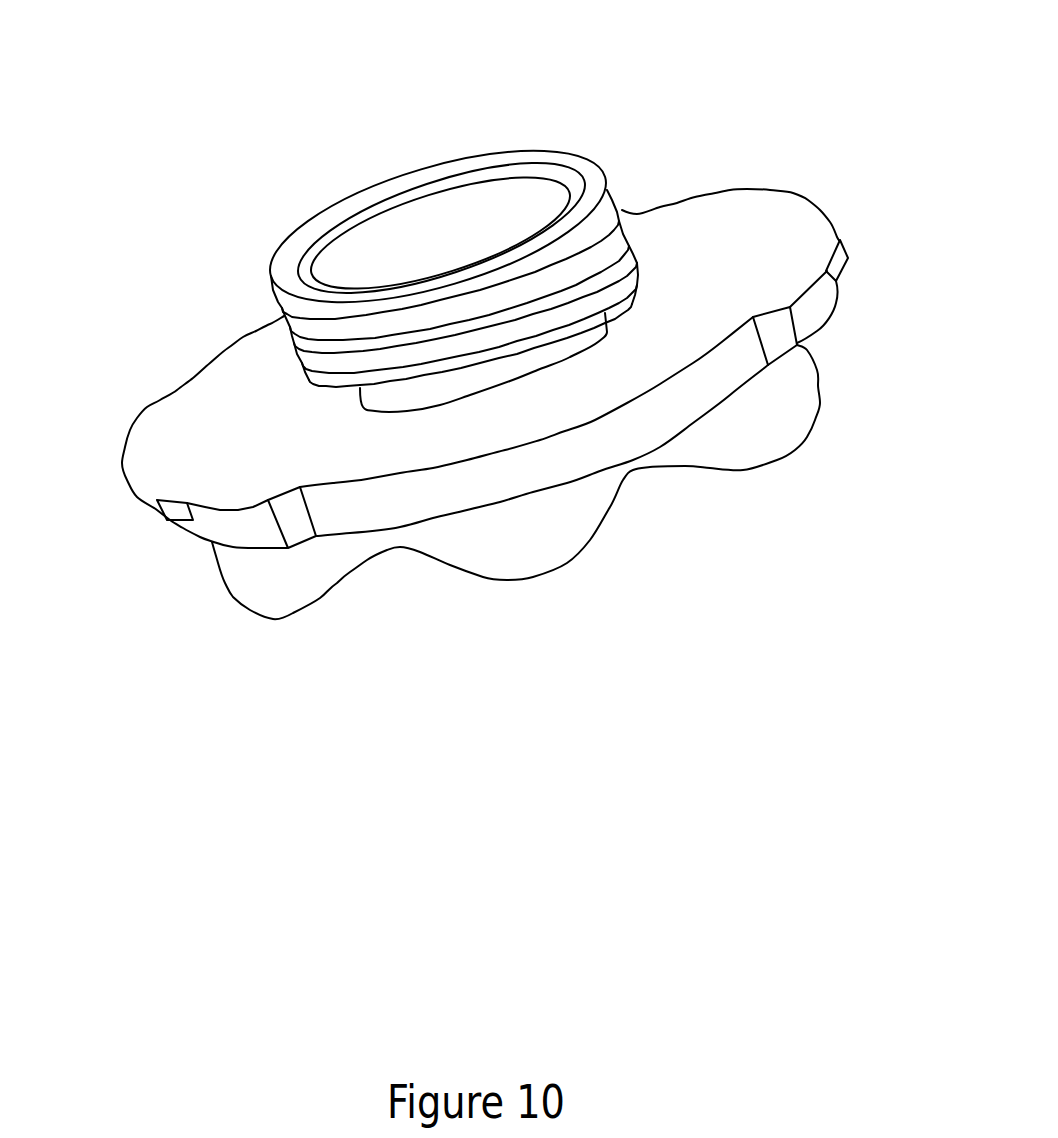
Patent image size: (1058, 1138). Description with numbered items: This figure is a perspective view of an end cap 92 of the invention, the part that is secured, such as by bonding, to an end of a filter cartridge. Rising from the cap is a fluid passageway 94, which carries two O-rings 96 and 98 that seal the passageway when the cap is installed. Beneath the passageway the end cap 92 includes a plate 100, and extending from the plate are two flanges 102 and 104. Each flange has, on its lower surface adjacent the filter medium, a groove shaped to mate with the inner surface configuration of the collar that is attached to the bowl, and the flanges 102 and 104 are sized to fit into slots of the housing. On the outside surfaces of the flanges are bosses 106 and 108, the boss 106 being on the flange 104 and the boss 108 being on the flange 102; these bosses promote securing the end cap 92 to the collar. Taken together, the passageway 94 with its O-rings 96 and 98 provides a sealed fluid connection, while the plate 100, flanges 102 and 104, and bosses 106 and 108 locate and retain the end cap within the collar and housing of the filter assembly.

The end cap 92 is at (775, 132).
The fluid passageway 94 is at (452, 228).
The O-ring 96 is at (610, 190).
The O-ring 98 is at (610, 247).
The plate 100 is at (483, 377).
The flange 102 is at (237, 532).
The flange 104 is at (815, 312).
The boss 106 is at (843, 253).
The boss 108 is at (148, 507).